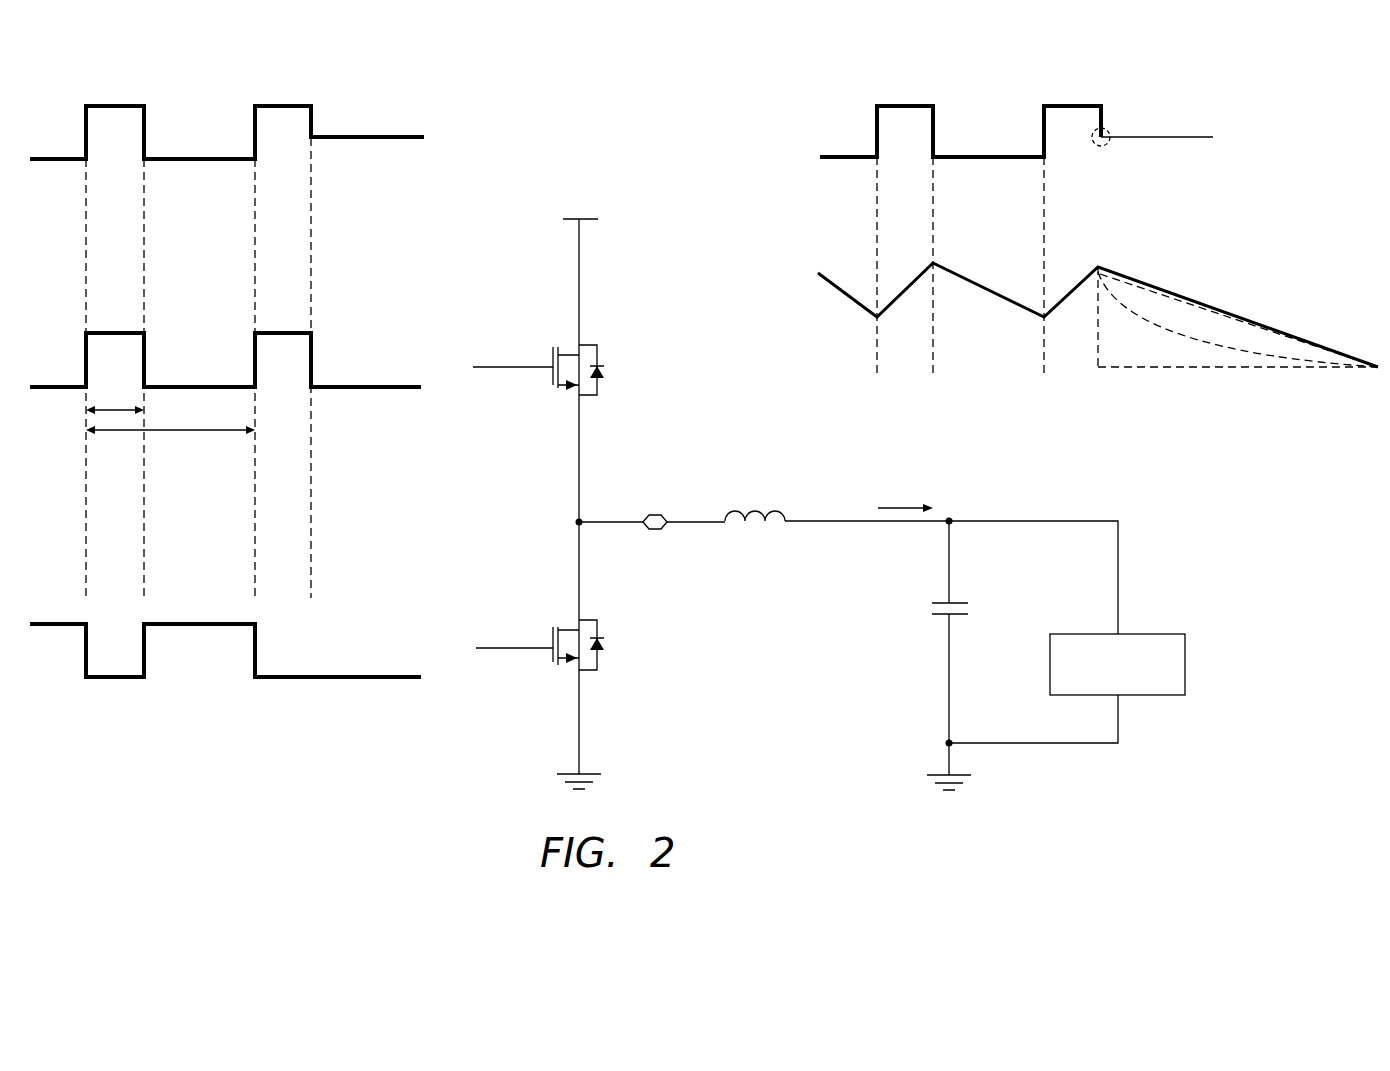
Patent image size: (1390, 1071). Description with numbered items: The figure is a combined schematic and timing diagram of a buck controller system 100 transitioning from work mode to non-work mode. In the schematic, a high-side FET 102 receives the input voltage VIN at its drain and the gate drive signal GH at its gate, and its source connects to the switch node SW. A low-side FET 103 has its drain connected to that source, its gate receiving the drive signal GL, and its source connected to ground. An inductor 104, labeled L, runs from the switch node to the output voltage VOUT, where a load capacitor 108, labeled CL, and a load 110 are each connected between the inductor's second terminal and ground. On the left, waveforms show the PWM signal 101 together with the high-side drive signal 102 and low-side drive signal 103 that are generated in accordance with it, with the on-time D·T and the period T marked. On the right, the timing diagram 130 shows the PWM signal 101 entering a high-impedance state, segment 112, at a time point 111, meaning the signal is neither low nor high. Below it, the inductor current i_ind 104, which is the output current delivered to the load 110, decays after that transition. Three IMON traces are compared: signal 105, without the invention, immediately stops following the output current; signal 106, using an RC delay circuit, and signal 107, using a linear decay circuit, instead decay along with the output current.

The buck controller system 100 is at (522, 233).
The pulse width modulation (PWM) signal 101 is at (62, 162).
The high-side (HS) field effect transistor 102 is at (55, 390).
The low-side (LS) FET 103 is at (55, 628).
The inductor 104 is at (742, 527).
The IMON signal 105 is at (1222, 372).
The IMON signal with RC delay circuit 106 is at (1157, 320).
The IMON signal with linear decay circuit 107 is at (1170, 300).
The load capacitor 108 is at (962, 600).
The load 110 is at (1160, 634).
The time point 111 is at (1112, 146).
The high-impedance segment of PWM signal 112 is at (1158, 136).
The timing diagram 130 is at (787, 80).